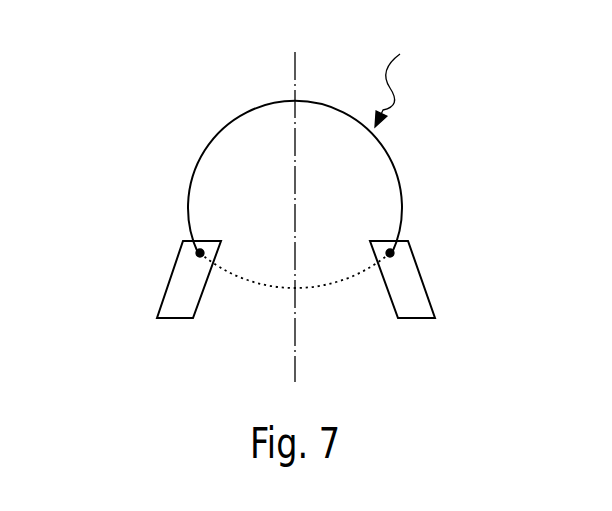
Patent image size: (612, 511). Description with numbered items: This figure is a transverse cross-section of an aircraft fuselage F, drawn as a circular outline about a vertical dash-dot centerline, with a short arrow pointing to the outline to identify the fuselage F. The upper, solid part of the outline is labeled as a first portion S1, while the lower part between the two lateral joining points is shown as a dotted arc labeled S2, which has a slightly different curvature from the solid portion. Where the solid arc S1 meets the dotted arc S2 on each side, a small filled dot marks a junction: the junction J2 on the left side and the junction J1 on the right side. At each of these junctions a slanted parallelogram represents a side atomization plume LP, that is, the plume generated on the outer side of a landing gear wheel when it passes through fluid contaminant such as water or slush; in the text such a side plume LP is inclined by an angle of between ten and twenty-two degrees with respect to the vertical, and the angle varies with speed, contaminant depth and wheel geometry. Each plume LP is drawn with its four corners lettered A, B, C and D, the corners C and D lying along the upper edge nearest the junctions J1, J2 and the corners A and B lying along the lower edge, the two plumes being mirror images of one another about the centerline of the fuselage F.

The fuselage F is at (393, 77).
The first section / outer circular arc S1 is at (396, 165).
The second section / inner dotted arc S2 is at (250, 283).
The first joint J1 is at (395, 253).
The second joint J2 is at (195, 253).
The side atomization plume LP is at (168, 280).
The corner A of link plate A is at (297, 325).
The corner B of link plate B is at (295, 325).
The corner C of link plate C is at (296, 228).
The corner D of link plate D is at (295, 228).